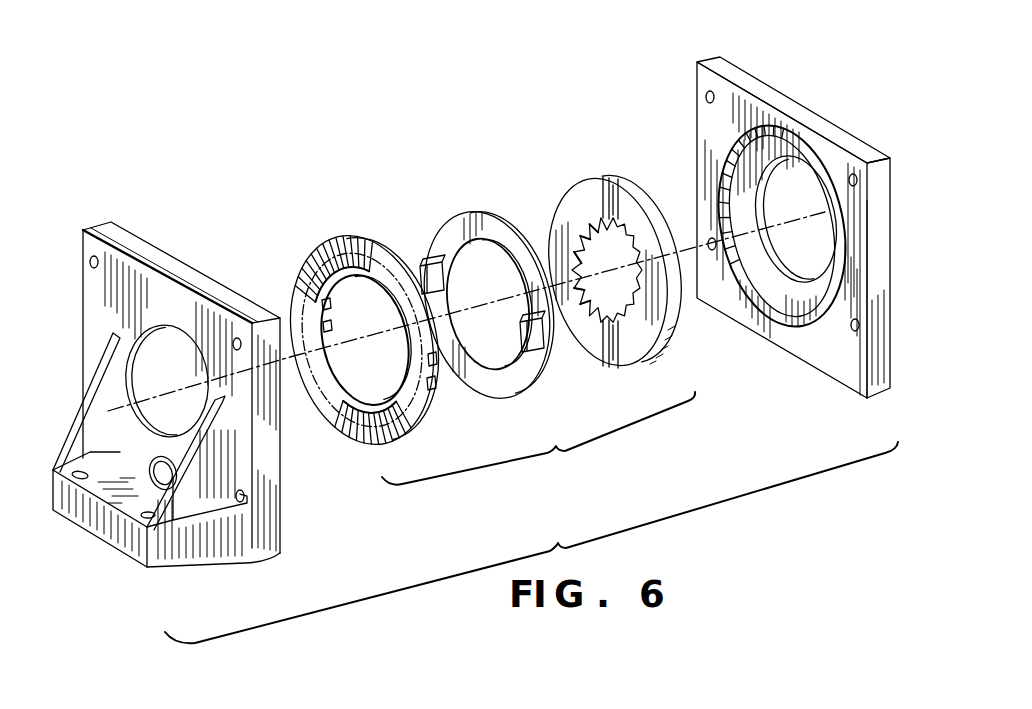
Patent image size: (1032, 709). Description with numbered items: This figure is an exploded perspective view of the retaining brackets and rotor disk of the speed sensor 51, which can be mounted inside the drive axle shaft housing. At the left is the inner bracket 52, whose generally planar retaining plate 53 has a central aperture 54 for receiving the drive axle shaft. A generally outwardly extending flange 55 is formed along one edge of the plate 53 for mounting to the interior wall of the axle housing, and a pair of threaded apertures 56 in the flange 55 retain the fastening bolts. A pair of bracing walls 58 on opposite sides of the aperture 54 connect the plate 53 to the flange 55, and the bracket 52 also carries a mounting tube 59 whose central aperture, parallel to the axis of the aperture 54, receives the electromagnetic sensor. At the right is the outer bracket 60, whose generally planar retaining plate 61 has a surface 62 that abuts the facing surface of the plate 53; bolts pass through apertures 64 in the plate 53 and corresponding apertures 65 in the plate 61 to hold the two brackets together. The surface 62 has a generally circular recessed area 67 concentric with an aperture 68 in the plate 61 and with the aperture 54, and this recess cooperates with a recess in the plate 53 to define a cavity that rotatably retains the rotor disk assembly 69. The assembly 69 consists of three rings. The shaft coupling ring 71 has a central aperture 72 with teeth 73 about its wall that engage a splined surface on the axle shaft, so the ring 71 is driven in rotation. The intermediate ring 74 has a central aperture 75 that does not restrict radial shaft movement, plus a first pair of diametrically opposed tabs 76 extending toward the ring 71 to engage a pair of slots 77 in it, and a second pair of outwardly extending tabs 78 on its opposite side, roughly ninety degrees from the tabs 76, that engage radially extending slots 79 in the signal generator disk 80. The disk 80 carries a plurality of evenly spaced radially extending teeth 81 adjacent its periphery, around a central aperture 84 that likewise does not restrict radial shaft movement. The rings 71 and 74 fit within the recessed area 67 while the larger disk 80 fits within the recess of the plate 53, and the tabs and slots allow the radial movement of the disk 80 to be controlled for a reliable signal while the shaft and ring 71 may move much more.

The speed sensor 51 is at (524, 102).
The inner bracket 52 is at (80, 336).
The retaining plate 53 is at (93, 291).
The central aperture 54 is at (132, 362).
The flange 55 is at (91, 534).
The apertures 56 is at (78, 480).
The bracing walls 58 is at (80, 413).
The mounting tube 59 is at (178, 455).
The outer bracket 60 is at (762, 82).
The retaining plate 61 is at (886, 190).
The surface 62 is at (832, 362).
The apertures 64 is at (90, 260).
The apertures 65 is at (706, 95).
The recessed area 67 is at (790, 302).
The aperture 68 is at (760, 206).
The rotor disk assembly 69 is at (538, 438).
The shaft coupling ring 71 is at (565, 185).
The central aperture 72 is at (624, 262).
The teeth 73 is at (640, 305).
The intermediate ring 74 is at (458, 208).
The central aperture 75 is at (456, 266).
The tabs 76 is at (500, 213).
The slots 77 is at (608, 190).
The tabs 78 is at (430, 272).
The slots 79 is at (334, 316).
The signal generator disk 80 is at (365, 240).
The teeth 81 is at (325, 245).
The central aperture 84 is at (350, 377).